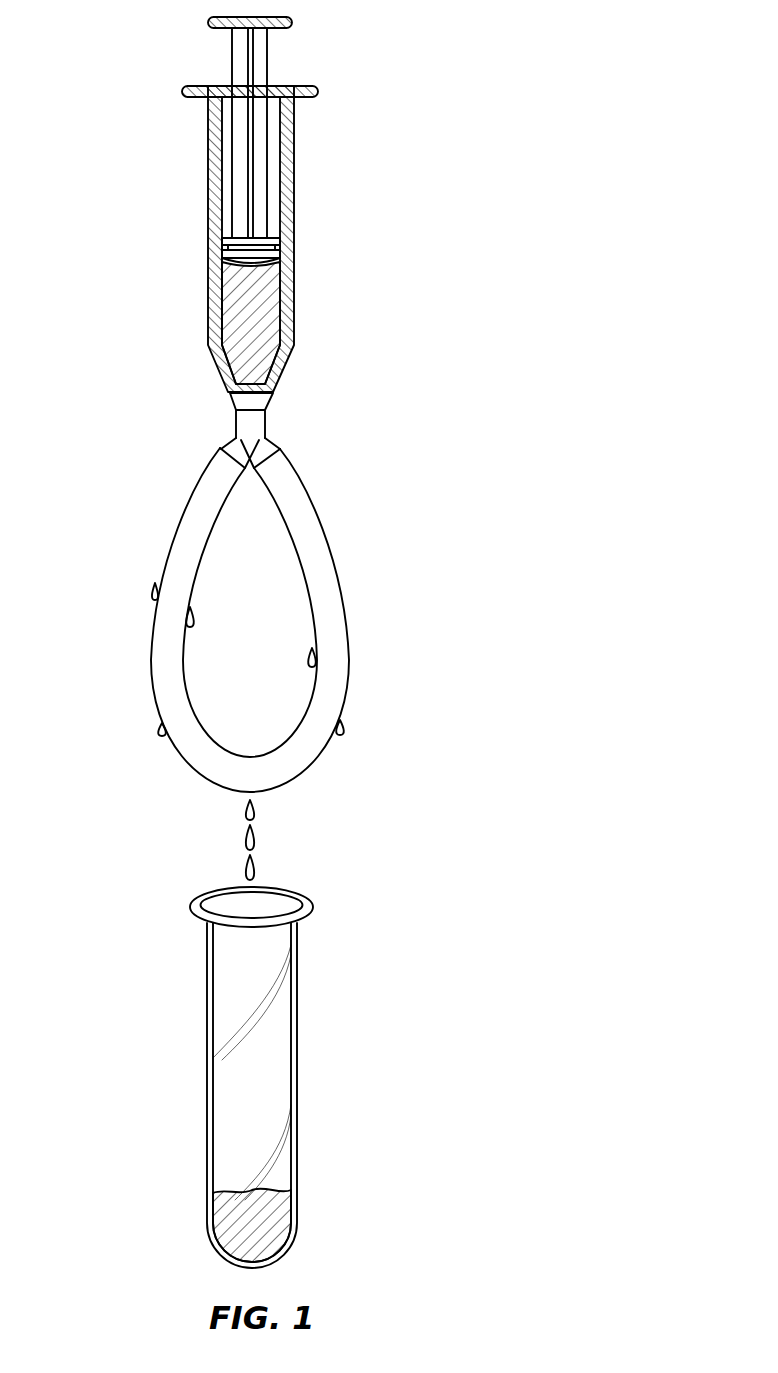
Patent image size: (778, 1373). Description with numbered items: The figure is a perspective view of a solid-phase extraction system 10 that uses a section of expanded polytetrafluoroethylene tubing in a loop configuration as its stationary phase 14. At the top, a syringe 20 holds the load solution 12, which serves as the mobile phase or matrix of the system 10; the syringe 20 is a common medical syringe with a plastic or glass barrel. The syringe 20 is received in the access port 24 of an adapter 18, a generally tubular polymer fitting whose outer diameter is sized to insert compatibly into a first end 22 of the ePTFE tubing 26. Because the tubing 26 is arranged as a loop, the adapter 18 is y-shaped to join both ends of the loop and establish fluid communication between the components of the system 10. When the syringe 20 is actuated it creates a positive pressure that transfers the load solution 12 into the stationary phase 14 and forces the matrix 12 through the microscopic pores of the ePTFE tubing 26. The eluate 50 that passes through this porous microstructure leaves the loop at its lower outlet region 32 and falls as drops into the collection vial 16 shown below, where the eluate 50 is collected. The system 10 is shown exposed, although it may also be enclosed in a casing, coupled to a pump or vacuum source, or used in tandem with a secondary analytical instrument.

The solid-phase extraction system 10 is at (508, 286).
The load solution 12 is at (300, 273).
The stationary phase 14 is at (330, 525).
The collection vial 16 is at (307, 966).
The adapter 18 is at (270, 423).
The syringe 20 is at (353, 82).
The first end 22 is at (210, 455).
The access port 24 is at (224, 438).
The ePTFE tubing 26 is at (224, 398).
The drip point 32 is at (235, 798).
The eluate 50 is at (347, 600).